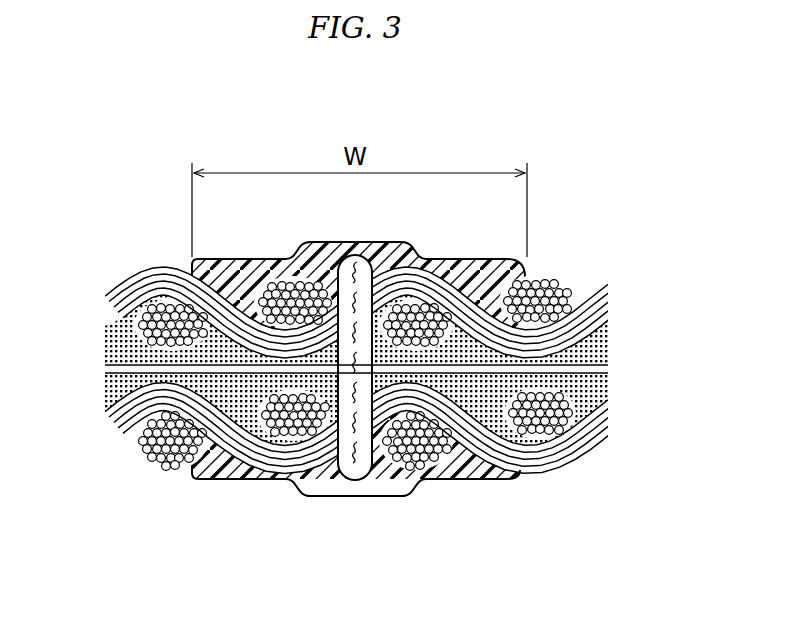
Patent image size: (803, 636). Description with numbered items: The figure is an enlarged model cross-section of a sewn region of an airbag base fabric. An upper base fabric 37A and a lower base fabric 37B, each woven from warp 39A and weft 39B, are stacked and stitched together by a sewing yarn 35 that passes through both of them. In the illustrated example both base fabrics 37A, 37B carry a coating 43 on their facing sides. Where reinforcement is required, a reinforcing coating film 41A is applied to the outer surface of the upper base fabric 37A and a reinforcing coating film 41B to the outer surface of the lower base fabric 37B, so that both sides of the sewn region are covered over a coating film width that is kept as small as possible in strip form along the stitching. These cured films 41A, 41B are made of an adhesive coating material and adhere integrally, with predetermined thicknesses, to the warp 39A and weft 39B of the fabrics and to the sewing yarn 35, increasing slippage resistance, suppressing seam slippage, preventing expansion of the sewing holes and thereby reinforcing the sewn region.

The sewing yarn 35 is at (352, 470).
The upper base fabric 37A is at (700, 240).
The lower base fabric 37B is at (700, 362).
The warp 39A is at (587, 341).
The weft 39B is at (585, 283).
The reinforcing coating film 41A is at (465, 268).
The reinforcing coating film 41B is at (465, 470).
The coating 43 is at (123, 352).